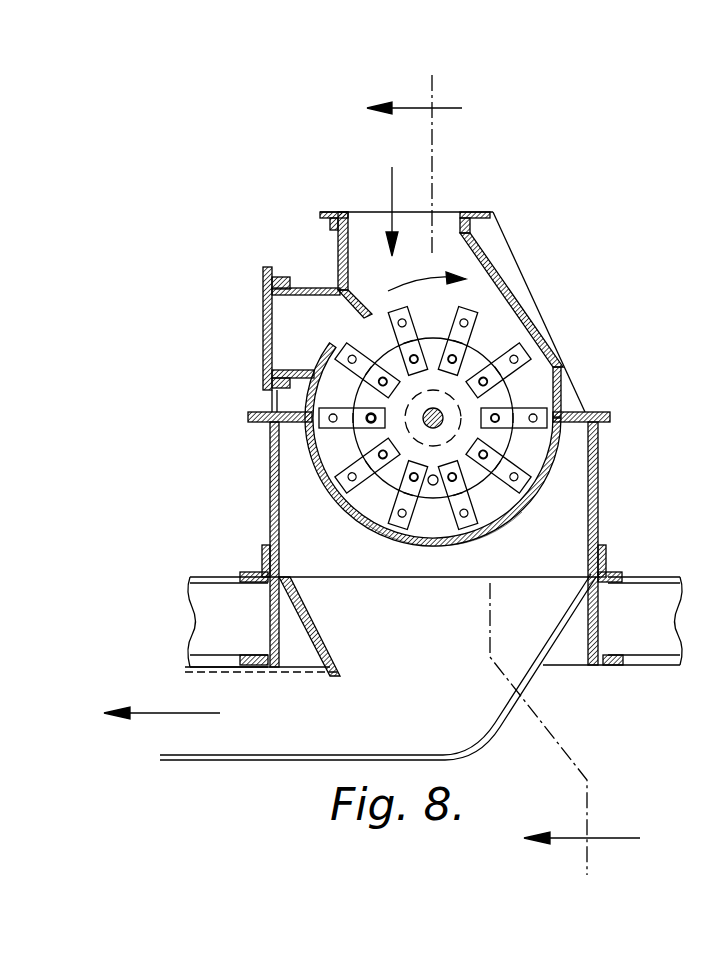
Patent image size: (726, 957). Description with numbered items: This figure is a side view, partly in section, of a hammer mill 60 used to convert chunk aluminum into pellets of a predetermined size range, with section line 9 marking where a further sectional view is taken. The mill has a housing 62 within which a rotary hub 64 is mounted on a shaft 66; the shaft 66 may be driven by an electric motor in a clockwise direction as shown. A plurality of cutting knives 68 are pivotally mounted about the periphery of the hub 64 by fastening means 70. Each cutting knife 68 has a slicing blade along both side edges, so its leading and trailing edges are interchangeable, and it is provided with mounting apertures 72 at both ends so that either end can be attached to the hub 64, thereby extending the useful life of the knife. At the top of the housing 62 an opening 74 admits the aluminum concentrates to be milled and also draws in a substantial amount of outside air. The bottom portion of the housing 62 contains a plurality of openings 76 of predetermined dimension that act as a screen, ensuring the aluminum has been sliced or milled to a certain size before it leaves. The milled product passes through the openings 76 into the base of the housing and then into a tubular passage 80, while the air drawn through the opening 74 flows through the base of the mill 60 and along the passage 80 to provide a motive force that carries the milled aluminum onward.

The section line 9 is at (503, 475).
The hammer mill 60 is at (228, 393).
The housing 62 is at (340, 245).
The rotary hub 64 is at (552, 390).
The shaft 66 is at (445, 428).
The cutting knives 68 is at (528, 319).
The fastening means 70 is at (350, 440).
The mounting apertures 72 is at (347, 496).
The opening 74 is at (363, 217).
The openings 76 is at (366, 524).
The tubular passage 80 is at (192, 762).